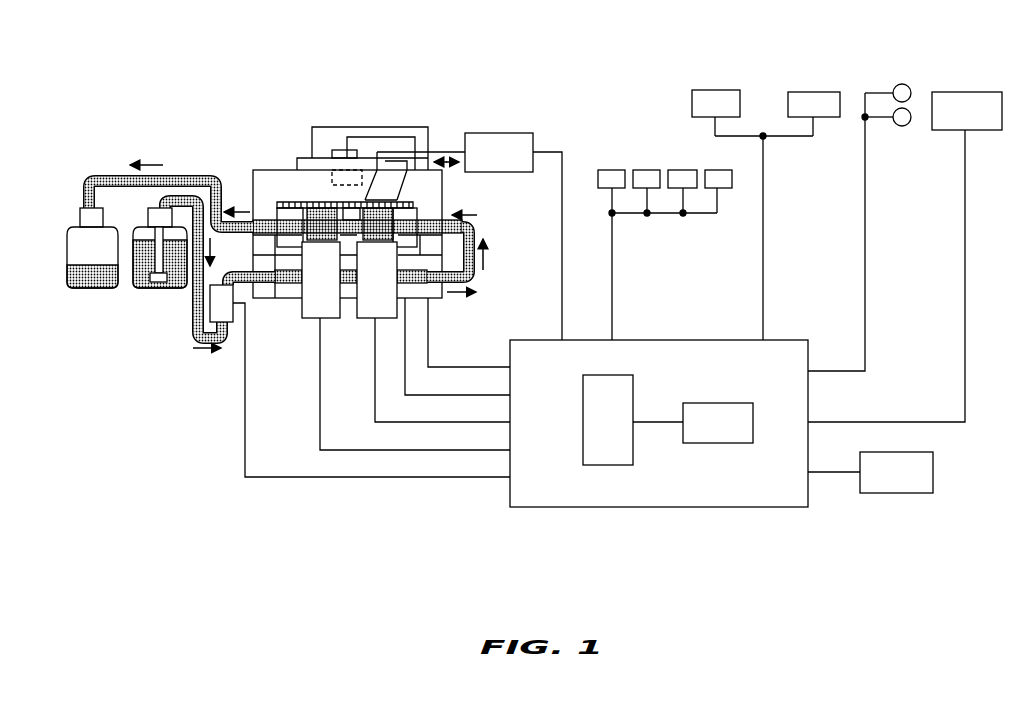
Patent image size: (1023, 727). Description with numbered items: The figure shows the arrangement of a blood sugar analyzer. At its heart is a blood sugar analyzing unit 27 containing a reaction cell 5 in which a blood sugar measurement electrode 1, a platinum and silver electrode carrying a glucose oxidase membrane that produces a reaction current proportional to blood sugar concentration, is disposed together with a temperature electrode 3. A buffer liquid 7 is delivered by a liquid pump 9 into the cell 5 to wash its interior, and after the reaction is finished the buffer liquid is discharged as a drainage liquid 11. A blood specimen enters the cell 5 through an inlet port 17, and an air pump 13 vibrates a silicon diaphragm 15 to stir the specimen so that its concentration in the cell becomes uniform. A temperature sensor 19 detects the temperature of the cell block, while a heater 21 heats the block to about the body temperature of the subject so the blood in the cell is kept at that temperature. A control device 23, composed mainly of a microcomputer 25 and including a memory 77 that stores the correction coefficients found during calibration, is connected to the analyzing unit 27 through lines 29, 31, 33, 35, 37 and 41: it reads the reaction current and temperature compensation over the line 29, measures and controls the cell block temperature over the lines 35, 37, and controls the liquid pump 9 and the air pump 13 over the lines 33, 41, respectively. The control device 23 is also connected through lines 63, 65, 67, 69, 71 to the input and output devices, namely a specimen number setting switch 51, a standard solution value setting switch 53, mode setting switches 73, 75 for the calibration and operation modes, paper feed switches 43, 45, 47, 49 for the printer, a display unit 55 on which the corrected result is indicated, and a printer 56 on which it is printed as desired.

The blood sugar measurement electrode 1 is at (320, 318).
The temperature electrode 3 is at (370, 318).
The reaction cell 5 is at (278, 215).
The buffer liquid 7 is at (155, 290).
The liquid pump 9 is at (237, 318).
The drainage liquid 11 is at (83, 290).
The air pump 13 is at (497, 133).
The silicon diaphragm 15 is at (407, 200).
The inlet port 17 is at (415, 213).
The temperature sensor 19 is at (343, 150).
The heater 21 is at (300, 157).
The control device 23 is at (659, 450).
The microcomputer 25 is at (634, 403).
The blood sugar analyzing unit 27 is at (305, 105).
The line 29 is at (320, 426).
The line 31 is at (377, 375).
The line 33 is at (245, 443).
The line 35 is at (372, 127).
The line 37 is at (400, 137).
The line 41 is at (562, 283).
The paper feed switch 43 is at (598, 171).
The paper feed switch 45 is at (641, 170).
The paper feed switch 47 is at (683, 170).
The paper feed switch 49 is at (715, 170).
The specimen number setting switch 51 is at (712, 90).
The standard solution value setting switch 53 is at (808, 92).
The display unit 55 is at (970, 92).
The printer 56 is at (933, 472).
The line 63 is at (612, 283).
The line 65 is at (763, 283).
The line 67 is at (830, 371).
The line 69 is at (903, 422).
The line 71 is at (835, 473).
The mode setting switch 73 is at (902, 84).
The mode setting switch 75 is at (902, 126).
The memory 77 is at (735, 403).